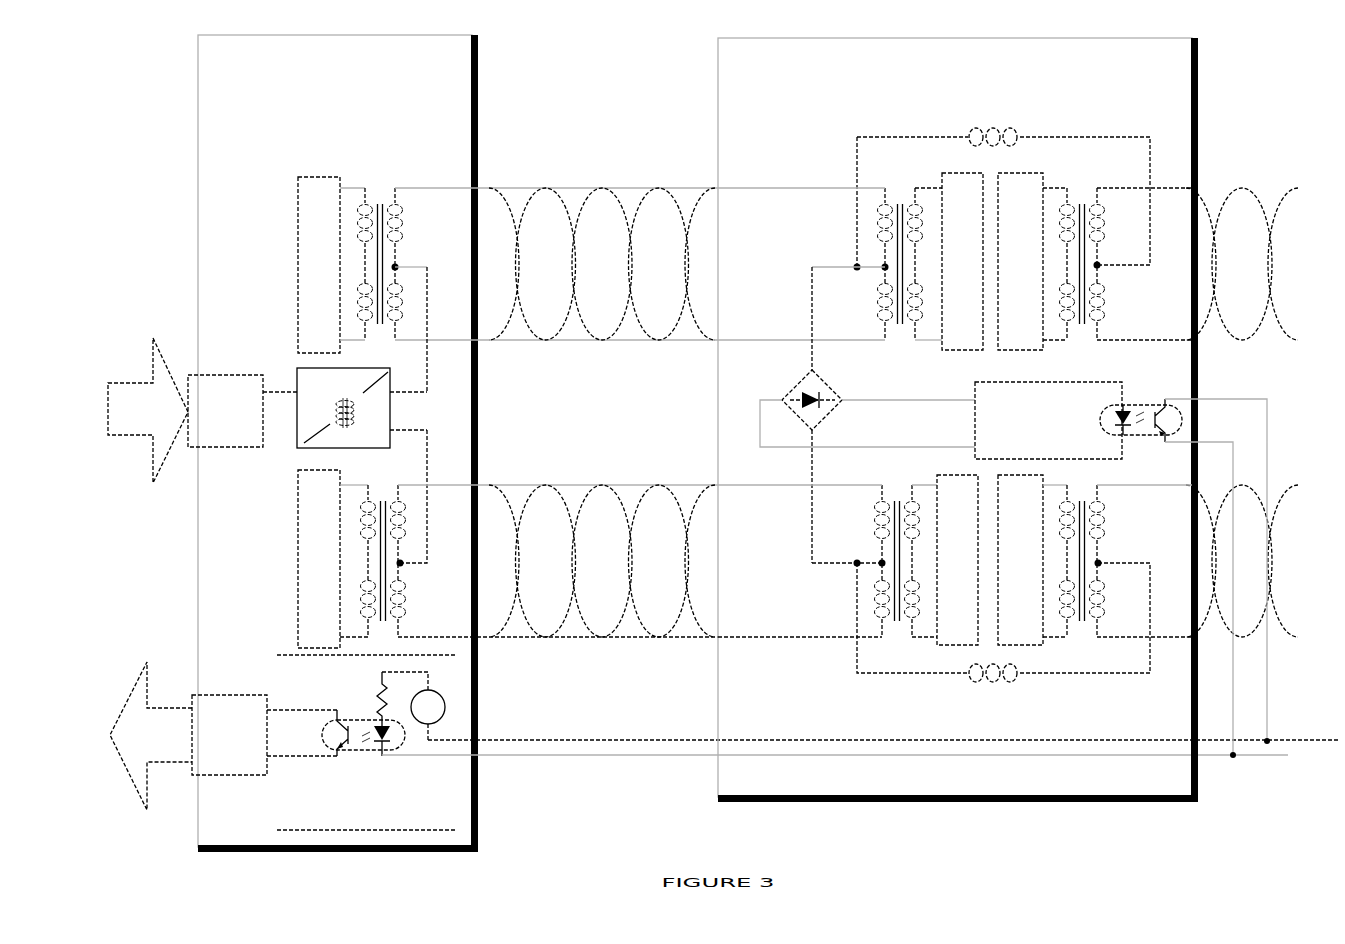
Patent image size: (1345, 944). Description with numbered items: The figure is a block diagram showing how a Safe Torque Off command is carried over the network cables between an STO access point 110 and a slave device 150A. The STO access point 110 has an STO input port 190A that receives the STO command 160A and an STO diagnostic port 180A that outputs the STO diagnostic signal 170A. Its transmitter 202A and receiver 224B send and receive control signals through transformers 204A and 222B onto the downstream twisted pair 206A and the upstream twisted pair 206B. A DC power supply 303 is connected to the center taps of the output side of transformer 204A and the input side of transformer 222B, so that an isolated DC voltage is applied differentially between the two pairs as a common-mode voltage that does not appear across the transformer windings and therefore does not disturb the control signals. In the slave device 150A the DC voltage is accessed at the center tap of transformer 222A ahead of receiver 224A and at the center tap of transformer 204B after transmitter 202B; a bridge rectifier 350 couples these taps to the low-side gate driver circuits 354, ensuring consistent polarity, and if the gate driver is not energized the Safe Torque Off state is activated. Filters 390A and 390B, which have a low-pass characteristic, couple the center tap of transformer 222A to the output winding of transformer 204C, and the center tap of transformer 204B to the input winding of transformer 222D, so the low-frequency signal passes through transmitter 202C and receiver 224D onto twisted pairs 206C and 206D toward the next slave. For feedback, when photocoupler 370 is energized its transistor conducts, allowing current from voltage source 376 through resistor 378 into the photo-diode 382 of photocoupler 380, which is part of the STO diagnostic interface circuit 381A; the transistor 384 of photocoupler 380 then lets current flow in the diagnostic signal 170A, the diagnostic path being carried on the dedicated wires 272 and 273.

The STO access point 110 is at (338, 443).
The slave device 150A is at (958, 420).
The STO command 160A is at (147, 410).
The STO diagnostic signal 170A is at (151, 736).
The STO input port 190A is at (242, 411).
The STO diagnostic port 180A is at (264, 735).
The transmitter circuit 202A is at (316, 174).
The transmitter circuit 202B is at (957, 560).
The transmitter circuit 202C is at (1032, 261).
The transformer 204A is at (383, 194).
The transformer 204B is at (900, 640).
The transformer 204C is at (1082, 185).
The downstream twisted pair 206A is at (598, 174).
The upstream twisted pair 206B is at (592, 472).
The twisted pair 206C is at (1290, 345).
The twisted pair 206D is at (1297, 654).
The transformer 222A is at (897, 185).
The transformer 222B is at (415, 595).
The transformer 222D is at (1085, 640).
The receiver circuit 224A is at (962, 261).
The receiver circuit 224B is at (295, 477).
The receiver circuit 224D is at (1032, 560).
The STO diagnostic wire 272 is at (595, 740).
The STO diagnostic wire 273 is at (595, 757).
The DC power supply 303 is at (370, 450).
The bridge rectifier 350 is at (797, 381).
The low-side gate driver circuits 354 is at (1048, 420).
The photocoupler 370 is at (1148, 402).
The voltage source 376 is at (445, 694).
The resistor 378 is at (378, 690).
The photocoupler 380 is at (368, 757).
The STO diagnostic interface circuit 381A is at (368, 813).
The photo-diode 382 is at (385, 757).
The transistor 384 is at (350, 757).
The filter 390A is at (966, 136).
The filter 390B is at (966, 674).